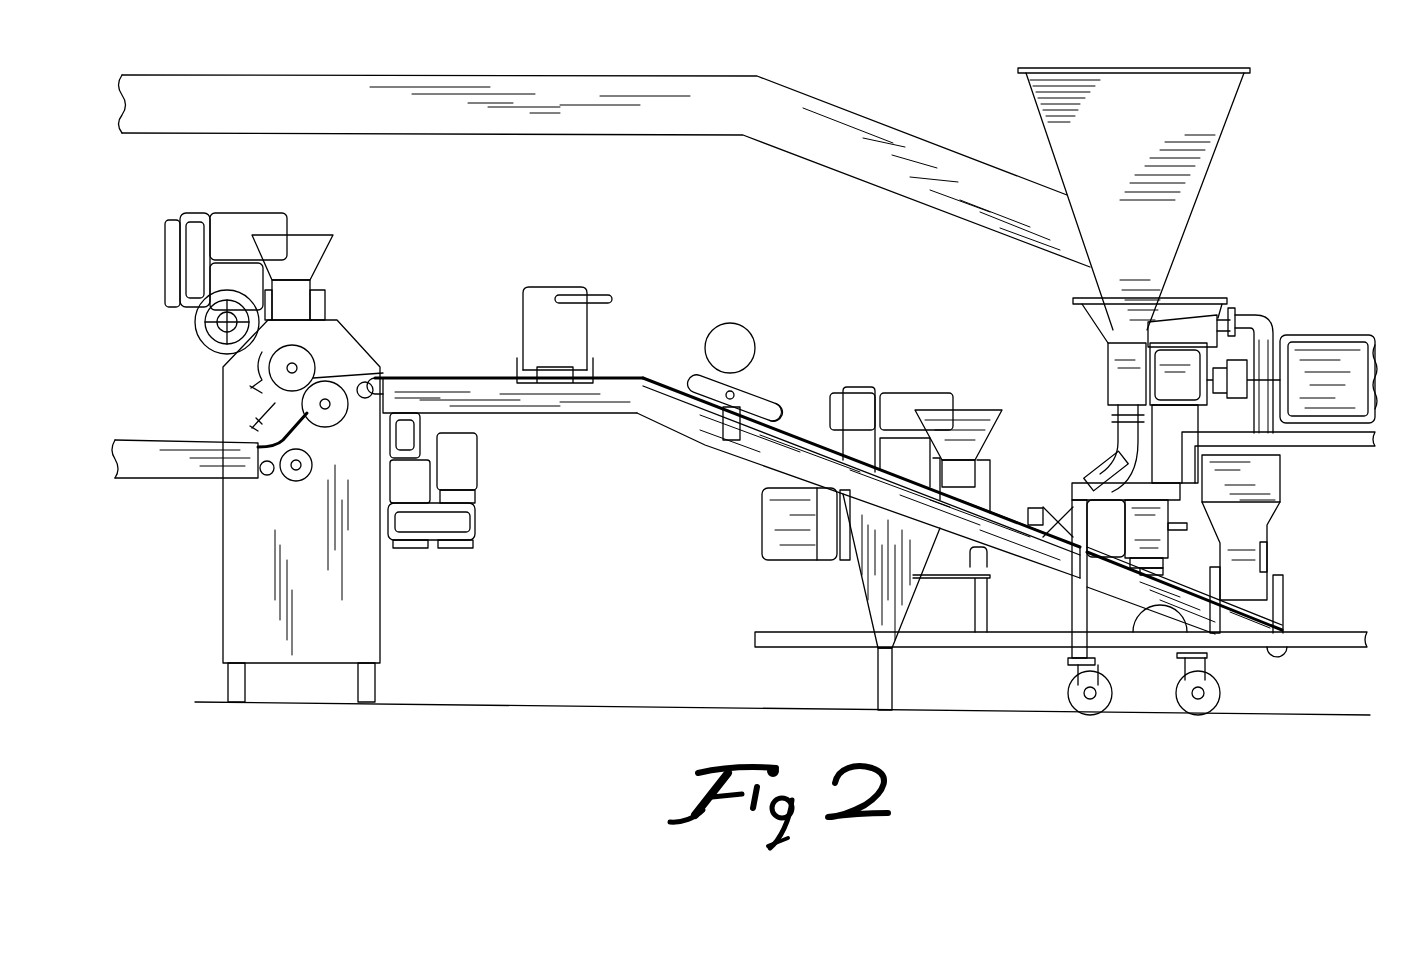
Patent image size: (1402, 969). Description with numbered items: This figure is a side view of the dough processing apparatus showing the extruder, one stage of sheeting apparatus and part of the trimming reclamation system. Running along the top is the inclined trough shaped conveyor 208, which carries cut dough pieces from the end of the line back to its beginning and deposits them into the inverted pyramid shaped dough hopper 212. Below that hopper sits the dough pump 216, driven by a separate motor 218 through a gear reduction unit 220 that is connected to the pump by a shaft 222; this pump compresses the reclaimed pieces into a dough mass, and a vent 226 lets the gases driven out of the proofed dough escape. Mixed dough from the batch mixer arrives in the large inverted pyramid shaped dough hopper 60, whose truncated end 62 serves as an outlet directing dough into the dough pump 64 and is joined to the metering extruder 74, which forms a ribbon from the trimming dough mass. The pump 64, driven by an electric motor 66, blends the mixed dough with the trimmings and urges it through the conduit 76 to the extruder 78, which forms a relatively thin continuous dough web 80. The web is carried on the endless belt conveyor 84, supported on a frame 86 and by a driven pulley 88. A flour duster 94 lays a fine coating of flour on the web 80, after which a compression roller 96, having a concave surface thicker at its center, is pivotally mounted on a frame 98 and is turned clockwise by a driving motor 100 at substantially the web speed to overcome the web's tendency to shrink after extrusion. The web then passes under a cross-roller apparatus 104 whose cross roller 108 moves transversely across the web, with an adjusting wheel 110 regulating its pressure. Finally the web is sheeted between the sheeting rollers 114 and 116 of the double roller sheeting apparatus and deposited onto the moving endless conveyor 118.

The inclined trough shaped conveyor 208 is at (636, 74).
The dough hopper 60 is at (1210, 162).
The truncated end 62 is at (1085, 283).
The dough hopper 212 is at (1180, 297).
The metering extruder 74 is at (1150, 327).
The dough pump 64 is at (1108, 387).
The electric motor 66 is at (1335, 330).
The vent 226 is at (1185, 529).
The dough pump 216 is at (1160, 545).
The endless belt conveyor 84 is at (1183, 590).
The conduit 76 is at (1113, 445).
The extruder 78 is at (1098, 468).
The shaft 222 is at (1036, 505).
The frame 86 is at (767, 465).
The dough web 80 is at (1002, 515).
The driven pulley 88 is at (383, 378).
The cross-roller apparatus 104 is at (587, 338).
The cross roller 108 is at (577, 372).
The adjusting wheel 110 is at (592, 292).
The driving motor 100 is at (748, 327).
The frame 98 is at (752, 385).
The compression roller 96 is at (782, 405).
The flour duster 94 is at (973, 408).
The motor 218 is at (777, 562).
The gear reduction unit 220 is at (853, 562).
The sheeting roller 114 is at (307, 348).
The sheeting roller 116 is at (333, 417).
The conveyor 118 is at (273, 462).